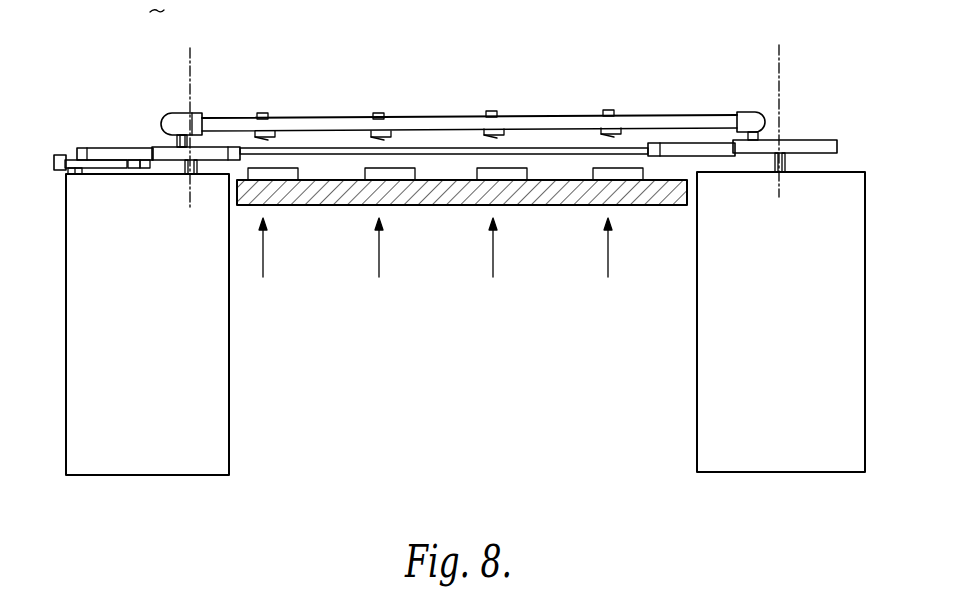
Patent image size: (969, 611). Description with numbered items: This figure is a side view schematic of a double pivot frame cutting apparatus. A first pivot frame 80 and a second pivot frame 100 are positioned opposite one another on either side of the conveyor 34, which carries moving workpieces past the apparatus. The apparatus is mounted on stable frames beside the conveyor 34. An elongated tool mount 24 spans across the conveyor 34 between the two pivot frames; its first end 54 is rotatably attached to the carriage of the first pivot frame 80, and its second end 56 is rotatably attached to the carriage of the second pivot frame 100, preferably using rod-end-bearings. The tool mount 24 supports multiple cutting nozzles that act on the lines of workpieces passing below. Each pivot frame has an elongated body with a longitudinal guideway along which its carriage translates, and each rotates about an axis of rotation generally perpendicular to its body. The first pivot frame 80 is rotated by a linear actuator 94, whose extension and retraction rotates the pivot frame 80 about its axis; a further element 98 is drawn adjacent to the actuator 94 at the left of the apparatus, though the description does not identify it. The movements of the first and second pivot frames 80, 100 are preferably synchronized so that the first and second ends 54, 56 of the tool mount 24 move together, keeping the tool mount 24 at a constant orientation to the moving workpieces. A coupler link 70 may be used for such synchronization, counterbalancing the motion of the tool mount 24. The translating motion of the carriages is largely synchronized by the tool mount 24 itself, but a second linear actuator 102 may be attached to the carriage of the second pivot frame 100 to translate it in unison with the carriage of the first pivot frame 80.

The tool mount 24 is at (466, 117).
The conveyor 34 is at (565, 200).
The first end 54 is at (197, 117).
The second end 56 is at (752, 120).
The coupler link 70 is at (316, 150).
The pivot frame 80 is at (222, 149).
The linear actuator 94 is at (70, 156).
The mount 98 is at (118, 148).
The second pivot frame 100 is at (841, 139).
The second linear actuator 102 is at (688, 148).